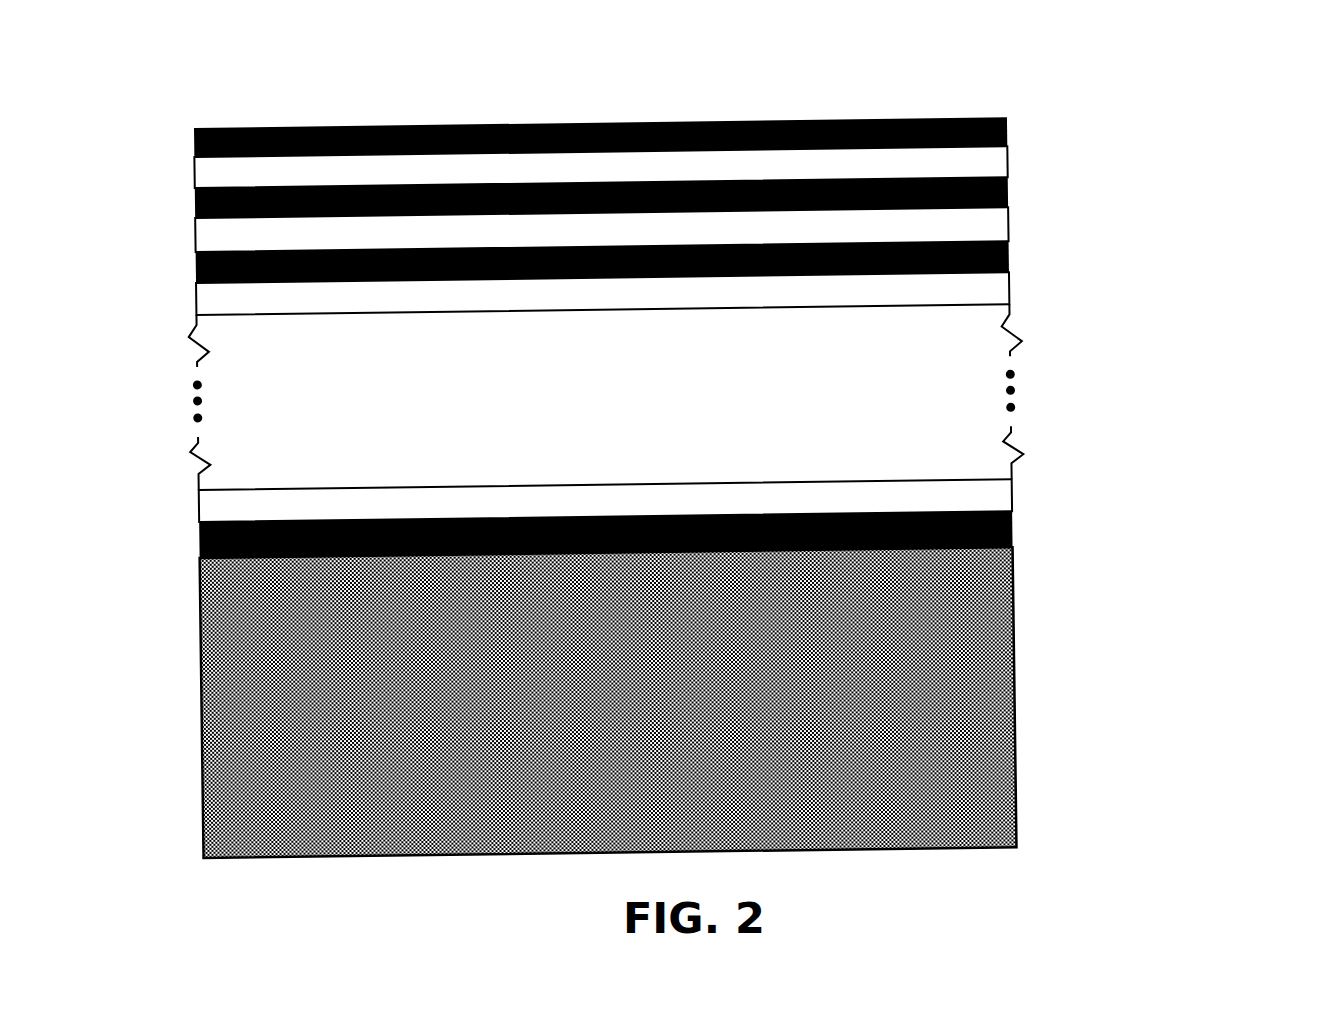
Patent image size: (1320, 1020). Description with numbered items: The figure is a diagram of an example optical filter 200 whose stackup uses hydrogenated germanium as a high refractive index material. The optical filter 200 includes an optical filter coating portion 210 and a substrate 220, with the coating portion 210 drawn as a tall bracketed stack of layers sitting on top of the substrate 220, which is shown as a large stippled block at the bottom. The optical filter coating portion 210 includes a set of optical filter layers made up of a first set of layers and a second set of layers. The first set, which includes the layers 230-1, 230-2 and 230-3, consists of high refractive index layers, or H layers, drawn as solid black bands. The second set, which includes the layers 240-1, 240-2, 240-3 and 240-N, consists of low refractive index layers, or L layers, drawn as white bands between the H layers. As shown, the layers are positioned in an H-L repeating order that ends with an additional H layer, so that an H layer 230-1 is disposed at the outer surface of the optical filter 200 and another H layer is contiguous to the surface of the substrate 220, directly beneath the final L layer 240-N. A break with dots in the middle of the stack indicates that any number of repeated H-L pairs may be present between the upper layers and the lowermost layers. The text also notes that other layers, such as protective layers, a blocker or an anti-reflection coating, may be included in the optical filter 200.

The optical filter 200 is at (163, 36).
The optical filter coating portion 210 is at (1160, 97).
The substrate 220 is at (623, 714).
The first layer of first set 230-1 is at (1090, 142).
The second layer of first set 230-2 is at (1090, 204).
The third layer of first set 230-3 is at (1090, 267).
The first layer of second set 240-1 is at (193, 178).
The second layer of second set 240-2 is at (193, 239).
The third layer of second set 240-3 is at (193, 303).
The Nth layer of second set 240-N is at (193, 509).